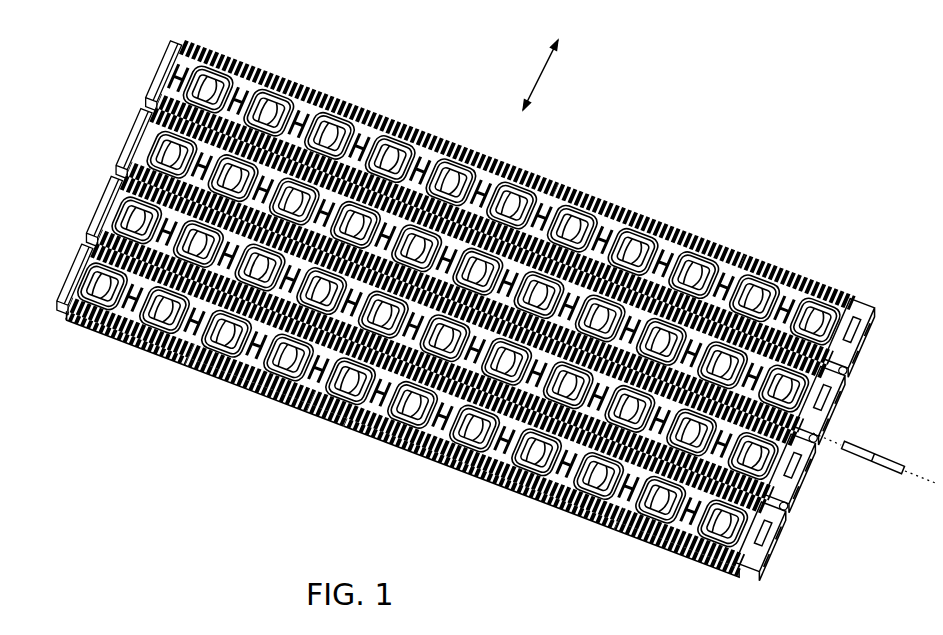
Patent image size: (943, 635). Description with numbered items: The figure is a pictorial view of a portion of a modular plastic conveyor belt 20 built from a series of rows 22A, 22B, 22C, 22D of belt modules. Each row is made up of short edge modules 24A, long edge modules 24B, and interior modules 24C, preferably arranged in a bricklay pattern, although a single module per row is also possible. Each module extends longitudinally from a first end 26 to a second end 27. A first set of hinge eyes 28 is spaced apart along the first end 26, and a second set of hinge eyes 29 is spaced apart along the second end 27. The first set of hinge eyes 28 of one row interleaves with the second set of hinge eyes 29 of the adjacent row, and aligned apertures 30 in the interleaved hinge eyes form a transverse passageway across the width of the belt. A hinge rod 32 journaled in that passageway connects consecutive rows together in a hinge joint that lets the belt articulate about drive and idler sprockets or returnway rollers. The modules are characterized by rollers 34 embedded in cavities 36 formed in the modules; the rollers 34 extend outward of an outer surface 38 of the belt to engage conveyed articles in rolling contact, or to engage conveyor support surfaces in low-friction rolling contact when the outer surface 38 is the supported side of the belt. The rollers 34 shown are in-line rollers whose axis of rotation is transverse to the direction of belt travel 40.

The belt 20 is at (673, 112).
The row of belt modules 22A is at (493, 209).
The row of belt modules 22B is at (487, 277).
The row of belt modules 22C is at (441, 348).
The row of belt modules 22D is at (414, 428).
The short edge module 24A is at (97, 330).
The long edge module 24B is at (711, 535).
The interior module 24C is at (415, 417).
The first end 26 is at (805, 268).
The second end 27 is at (828, 368).
The first set of hinge eyes 28 is at (685, 222).
The second set of hinge eyes 29 is at (508, 492).
The apertures 30 is at (769, 494).
The hinge rod 32 is at (856, 448).
The rollers 34 is at (712, 514).
The cavities 36 is at (210, 373).
The outer surface 38 is at (360, 100).
The direction of belt travel 40 is at (531, 65).